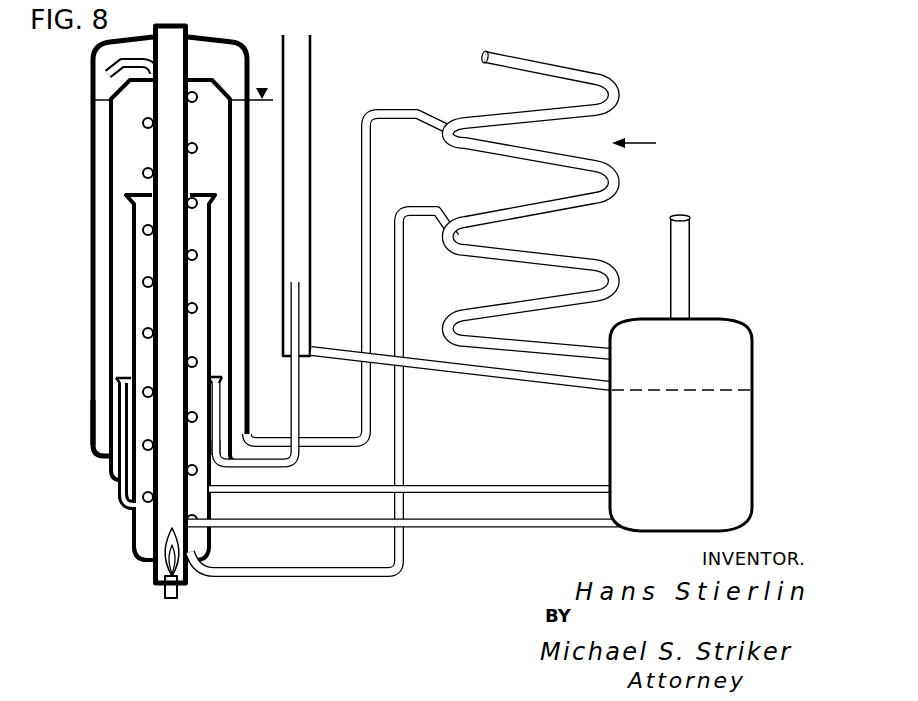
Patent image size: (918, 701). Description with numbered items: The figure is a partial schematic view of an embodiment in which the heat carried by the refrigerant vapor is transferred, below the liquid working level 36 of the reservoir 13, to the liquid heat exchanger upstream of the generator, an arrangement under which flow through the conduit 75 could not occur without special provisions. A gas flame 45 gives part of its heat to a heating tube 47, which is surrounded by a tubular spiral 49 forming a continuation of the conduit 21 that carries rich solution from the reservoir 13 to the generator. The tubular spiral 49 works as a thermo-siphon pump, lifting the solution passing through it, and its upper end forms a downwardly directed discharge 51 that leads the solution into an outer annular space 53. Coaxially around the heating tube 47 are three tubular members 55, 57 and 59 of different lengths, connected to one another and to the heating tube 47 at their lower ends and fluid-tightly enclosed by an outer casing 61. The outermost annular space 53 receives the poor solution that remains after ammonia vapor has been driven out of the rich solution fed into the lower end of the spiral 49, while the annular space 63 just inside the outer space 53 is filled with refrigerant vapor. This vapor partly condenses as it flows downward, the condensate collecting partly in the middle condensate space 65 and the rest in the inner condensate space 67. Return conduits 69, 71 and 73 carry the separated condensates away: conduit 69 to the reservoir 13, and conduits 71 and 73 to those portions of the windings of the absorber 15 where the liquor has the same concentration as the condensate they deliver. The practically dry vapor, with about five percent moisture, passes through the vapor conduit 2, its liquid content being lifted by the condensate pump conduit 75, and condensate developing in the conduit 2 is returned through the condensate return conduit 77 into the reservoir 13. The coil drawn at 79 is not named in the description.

The vapor conduit 2 is at (312, 253).
The reservoir 13 is at (620, 456).
The absorber 15 is at (648, 144).
The conduit 21 is at (348, 527).
The liquid working level 36 is at (679, 388).
The gas flame 45 is at (165, 569).
The heating tube 47 is at (140, 532).
The tubular spiral 49 is at (125, 498).
The downwardly directed discharge 51 is at (110, 70).
The outer annular space 53 is at (95, 230).
The tubular member 55 is at (222, 389).
The tubular member 57 is at (222, 424).
The tubular member 59 is at (107, 408).
The outer casing 61 is at (100, 358).
The annular space 63 is at (122, 273).
The middle condensate space 65 is at (128, 468).
The inner condensate space 67 is at (142, 314).
The return conduit 69 is at (350, 490).
The return conduit 71 is at (362, 389).
The return conduit 73 is at (280, 573).
The condensate pump conduit 75 is at (302, 421).
The condensate return conduit 77 is at (493, 377).
The cooling coil 79 is at (467, 313).